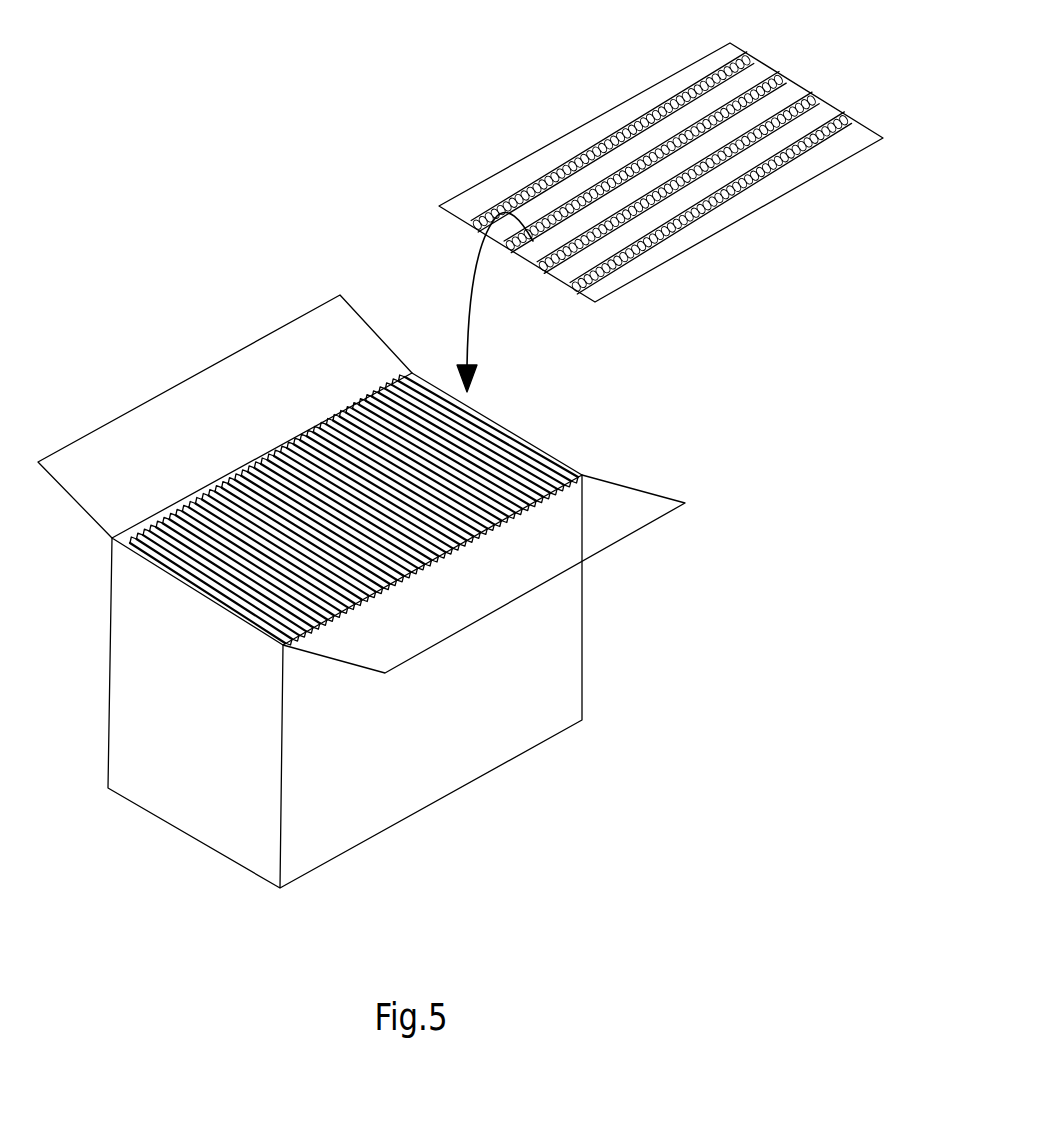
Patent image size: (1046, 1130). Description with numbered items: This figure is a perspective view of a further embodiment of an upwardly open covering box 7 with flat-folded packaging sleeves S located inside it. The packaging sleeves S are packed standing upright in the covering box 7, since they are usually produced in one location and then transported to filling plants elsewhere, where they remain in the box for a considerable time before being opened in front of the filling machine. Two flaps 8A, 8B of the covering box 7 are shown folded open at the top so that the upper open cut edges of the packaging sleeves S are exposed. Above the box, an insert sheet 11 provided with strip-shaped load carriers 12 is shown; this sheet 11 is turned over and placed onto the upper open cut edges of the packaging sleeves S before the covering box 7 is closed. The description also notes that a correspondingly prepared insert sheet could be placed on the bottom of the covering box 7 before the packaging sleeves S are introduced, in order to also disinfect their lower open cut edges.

The covering box 7 is at (188, 727).
The box flap 8A is at (205, 395).
The box flap 8B is at (590, 538).
The packaging sleeve S is at (513, 457).
The insert sheet 11 is at (662, 88).
The strip-shaped load carrier 12 is at (837, 118).